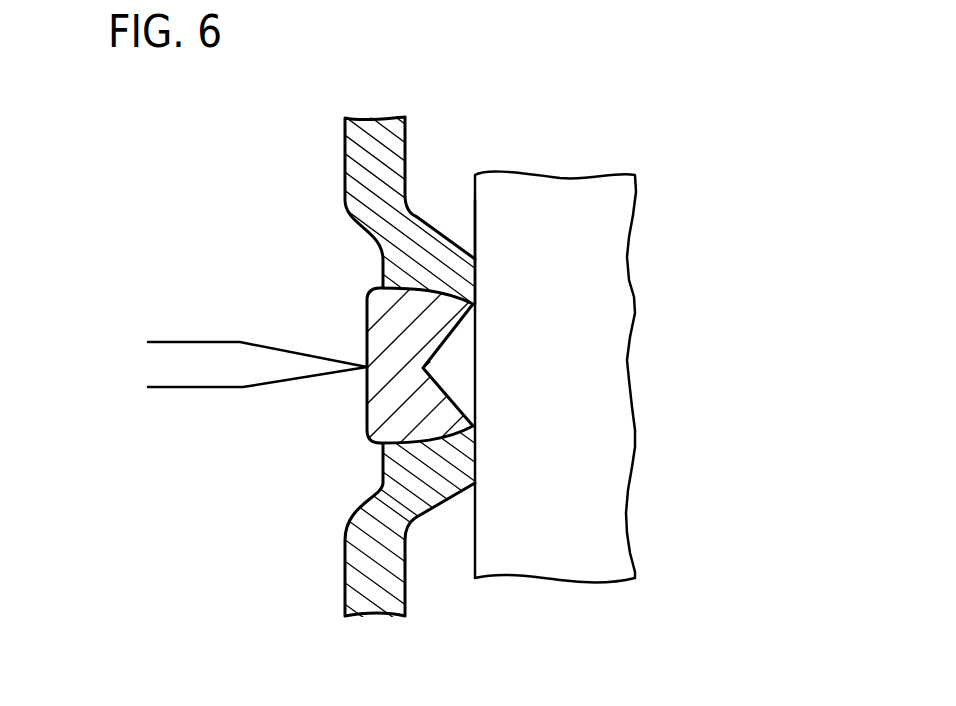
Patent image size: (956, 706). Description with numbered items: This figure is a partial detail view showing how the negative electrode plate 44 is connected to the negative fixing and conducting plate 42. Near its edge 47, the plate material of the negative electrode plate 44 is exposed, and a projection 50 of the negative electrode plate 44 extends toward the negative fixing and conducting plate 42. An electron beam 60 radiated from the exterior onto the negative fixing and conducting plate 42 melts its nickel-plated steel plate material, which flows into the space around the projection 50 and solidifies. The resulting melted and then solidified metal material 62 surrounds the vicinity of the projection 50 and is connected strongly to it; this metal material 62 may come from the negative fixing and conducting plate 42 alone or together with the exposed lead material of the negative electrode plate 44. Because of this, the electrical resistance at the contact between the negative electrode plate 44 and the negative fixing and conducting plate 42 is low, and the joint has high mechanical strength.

The negative fixing and conducting plate 42 is at (361, 147).
The negative electrode plate 44 is at (543, 187).
The edge of the negative electrode plate 47 is at (473, 203).
The projection of the negative electrode plate 50 is at (443, 367).
The electron beam 60 is at (203, 373).
The metal material 62 is at (365, 315).